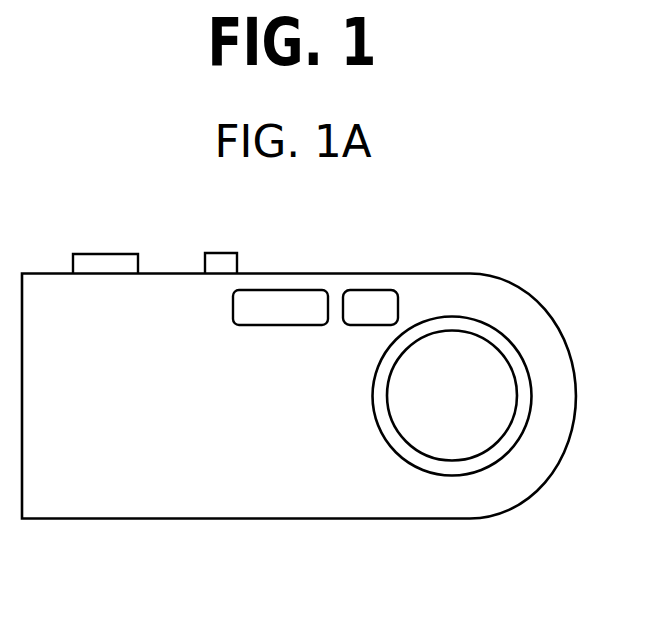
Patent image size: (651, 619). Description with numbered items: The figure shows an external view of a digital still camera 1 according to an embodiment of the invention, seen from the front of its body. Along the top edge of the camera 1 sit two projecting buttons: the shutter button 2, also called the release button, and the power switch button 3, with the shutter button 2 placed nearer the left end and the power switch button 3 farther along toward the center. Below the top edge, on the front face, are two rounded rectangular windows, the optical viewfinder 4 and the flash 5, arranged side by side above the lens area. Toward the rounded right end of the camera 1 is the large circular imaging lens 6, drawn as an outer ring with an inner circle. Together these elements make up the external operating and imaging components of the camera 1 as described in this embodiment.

The digital still camera 1 is at (218, 519).
The shutter button 2 is at (107, 254).
The power switch button 3 is at (220, 253).
The optical viewfinder 4 is at (371, 290).
The flash 5 is at (289, 290).
The imaging lens 6 is at (478, 318).